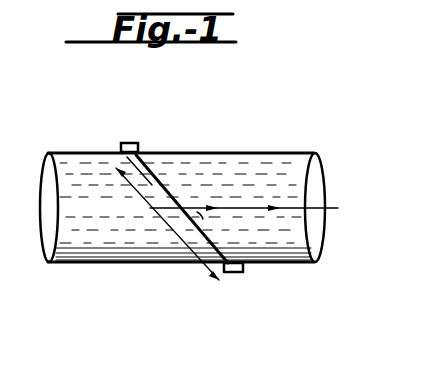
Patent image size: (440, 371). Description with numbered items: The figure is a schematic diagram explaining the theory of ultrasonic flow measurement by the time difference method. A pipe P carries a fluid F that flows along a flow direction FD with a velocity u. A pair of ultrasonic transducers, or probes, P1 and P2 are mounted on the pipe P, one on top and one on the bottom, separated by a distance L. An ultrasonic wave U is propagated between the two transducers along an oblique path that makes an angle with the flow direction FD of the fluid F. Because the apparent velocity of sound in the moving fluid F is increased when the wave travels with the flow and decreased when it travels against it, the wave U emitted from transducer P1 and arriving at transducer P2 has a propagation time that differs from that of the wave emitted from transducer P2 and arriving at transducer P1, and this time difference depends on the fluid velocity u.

The pipe P is at (276, 153).
The fluid F is at (122, 223).
The velocity of moving fluid u is at (199, 207).
The flow direction FD is at (264, 209).
The ultrasonic transducer P1 is at (128, 130).
The ultrasonic transducer P2 is at (239, 293).
The ultrasonic wave U is at (170, 178).
The distance between transducers L is at (167, 224).